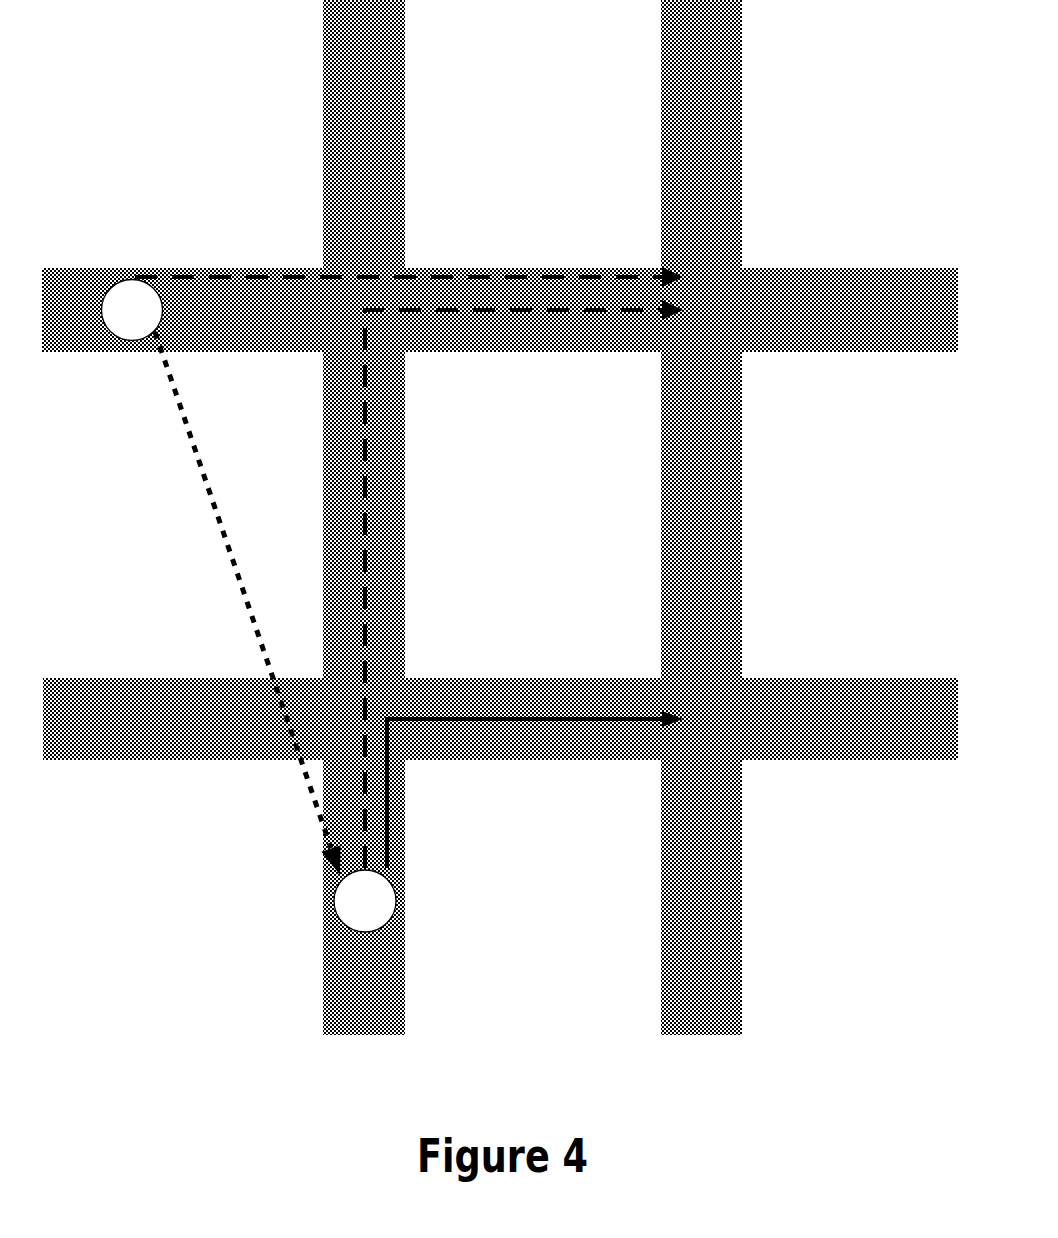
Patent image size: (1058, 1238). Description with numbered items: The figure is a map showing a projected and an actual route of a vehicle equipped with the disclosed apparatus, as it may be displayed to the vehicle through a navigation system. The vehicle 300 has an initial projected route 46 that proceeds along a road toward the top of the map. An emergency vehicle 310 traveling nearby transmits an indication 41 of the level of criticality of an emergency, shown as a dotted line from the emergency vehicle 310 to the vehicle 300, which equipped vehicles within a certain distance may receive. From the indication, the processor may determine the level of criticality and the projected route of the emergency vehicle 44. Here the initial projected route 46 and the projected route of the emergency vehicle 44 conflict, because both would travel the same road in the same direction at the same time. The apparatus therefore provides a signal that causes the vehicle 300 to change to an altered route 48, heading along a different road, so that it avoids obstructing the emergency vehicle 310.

The emergency vehicle 310 is at (172, 278).
The vehicle 300 is at (300, 890).
The indication 41 is at (215, 603).
The projected route of the emergency vehicle 44 is at (409, 246).
The initial projected route 46 is at (523, 584).
The altered route 48 is at (535, 757).